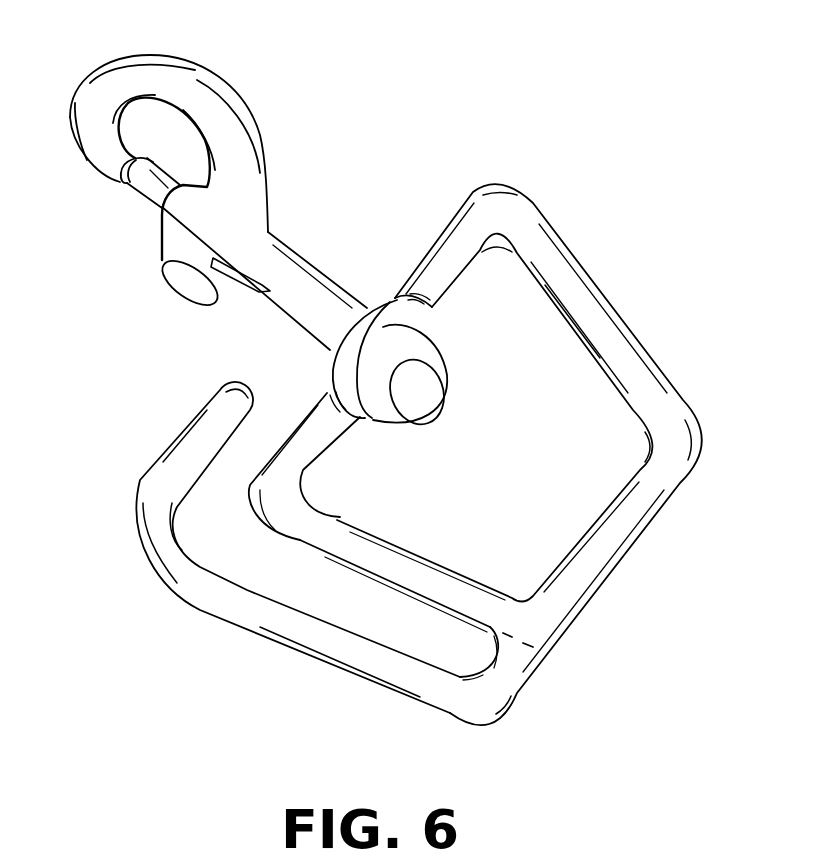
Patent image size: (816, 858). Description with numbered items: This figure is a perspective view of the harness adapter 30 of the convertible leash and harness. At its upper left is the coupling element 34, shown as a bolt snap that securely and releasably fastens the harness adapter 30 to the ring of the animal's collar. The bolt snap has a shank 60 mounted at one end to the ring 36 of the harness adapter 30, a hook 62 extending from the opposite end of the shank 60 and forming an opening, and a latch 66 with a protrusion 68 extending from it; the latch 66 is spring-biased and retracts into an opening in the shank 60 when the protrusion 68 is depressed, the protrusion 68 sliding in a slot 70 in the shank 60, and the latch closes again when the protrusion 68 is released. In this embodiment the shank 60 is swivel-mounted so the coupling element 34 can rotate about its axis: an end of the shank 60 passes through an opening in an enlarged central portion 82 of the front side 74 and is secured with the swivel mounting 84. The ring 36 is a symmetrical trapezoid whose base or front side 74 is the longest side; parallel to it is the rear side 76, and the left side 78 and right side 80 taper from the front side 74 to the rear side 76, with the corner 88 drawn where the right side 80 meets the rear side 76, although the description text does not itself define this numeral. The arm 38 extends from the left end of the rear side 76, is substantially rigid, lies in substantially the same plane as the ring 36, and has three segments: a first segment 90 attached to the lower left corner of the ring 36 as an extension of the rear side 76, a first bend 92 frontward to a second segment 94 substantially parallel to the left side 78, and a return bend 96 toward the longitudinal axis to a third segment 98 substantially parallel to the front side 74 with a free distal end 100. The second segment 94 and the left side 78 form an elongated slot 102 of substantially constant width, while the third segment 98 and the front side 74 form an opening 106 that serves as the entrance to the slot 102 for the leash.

The harness adapter 30 is at (498, 130).
The coupling element 34 is at (102, 63).
The ring 36 is at (590, 277).
The arm 38 is at (203, 610).
The shank 60 is at (307, 283).
The hook 62 is at (174, 80).
The latch 66 is at (150, 188).
The protrusion 68 is at (178, 277).
The slot 70 is at (247, 277).
The front side 74 is at (462, 222).
The rear side 76 is at (607, 550).
The left side 78 is at (414, 567).
The right side 80 is at (583, 323).
The enlarged central portion 82 is at (393, 311).
The swivel mounting 84 is at (373, 422).
The inner corner 88 is at (637, 410).
The first segment 90 is at (513, 667).
The first bend 92 is at (478, 705).
The second segment 94 is at (282, 630).
The return bend 96 is at (152, 540).
The third segment 98 is at (187, 442).
The free distal end 100 is at (243, 393).
The slot 102 is at (408, 635).
The opening 106 is at (293, 432).